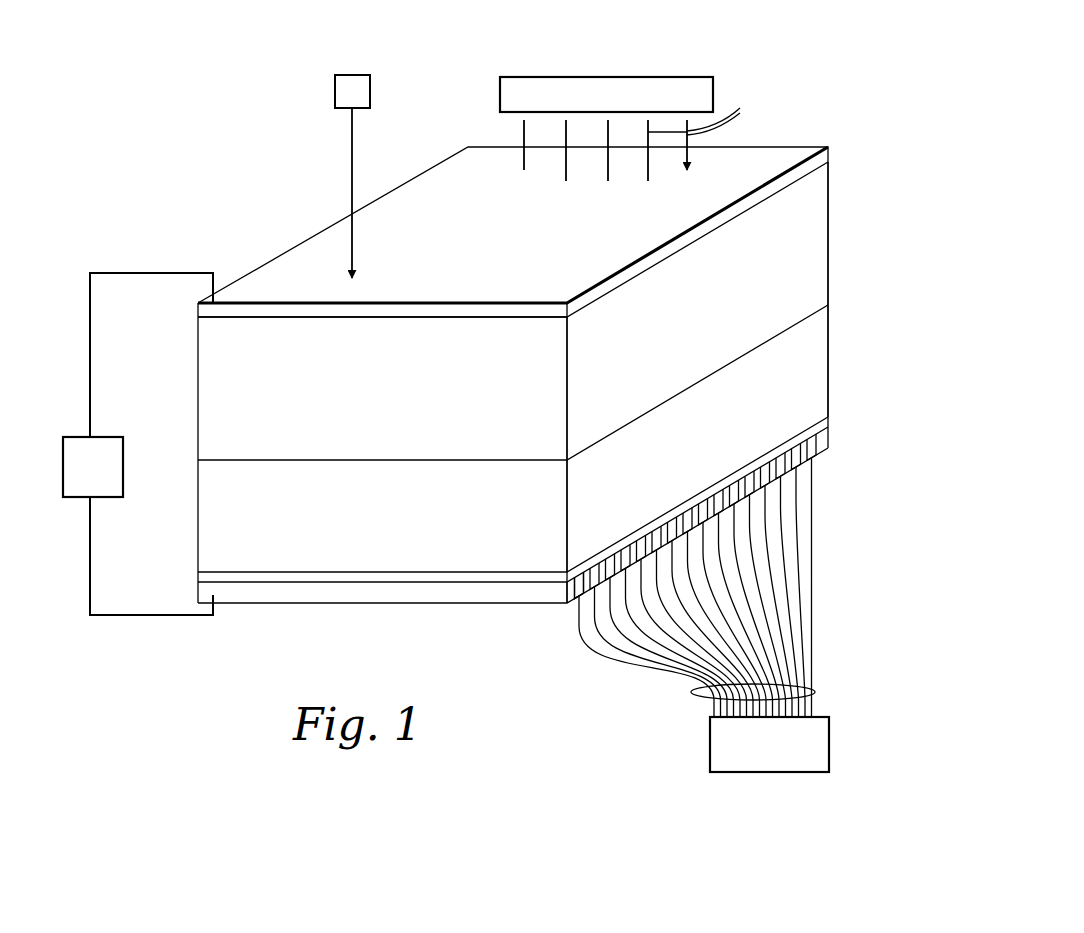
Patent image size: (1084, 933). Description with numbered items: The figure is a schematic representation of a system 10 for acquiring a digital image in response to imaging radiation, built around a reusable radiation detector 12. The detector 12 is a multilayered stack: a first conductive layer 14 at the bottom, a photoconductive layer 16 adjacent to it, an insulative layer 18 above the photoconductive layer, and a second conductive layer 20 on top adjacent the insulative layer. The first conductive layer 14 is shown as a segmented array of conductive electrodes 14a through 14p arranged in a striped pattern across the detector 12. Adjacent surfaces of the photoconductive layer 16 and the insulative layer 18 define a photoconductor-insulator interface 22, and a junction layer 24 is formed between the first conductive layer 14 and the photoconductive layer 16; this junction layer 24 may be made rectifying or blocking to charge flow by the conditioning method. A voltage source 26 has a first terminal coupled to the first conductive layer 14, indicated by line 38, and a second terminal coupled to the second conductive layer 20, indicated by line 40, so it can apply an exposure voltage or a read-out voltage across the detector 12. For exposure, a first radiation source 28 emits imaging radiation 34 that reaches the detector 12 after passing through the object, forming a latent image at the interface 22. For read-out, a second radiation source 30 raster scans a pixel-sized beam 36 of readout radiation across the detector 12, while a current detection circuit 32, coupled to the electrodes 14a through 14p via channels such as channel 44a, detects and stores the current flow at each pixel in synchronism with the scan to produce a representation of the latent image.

The system 10 is at (133, 639).
The reusable radiation detector 12 is at (874, 280).
The first conductive layer 14 is at (287, 601).
The conductive electrode 14a is at (566, 606).
The conductive electrode 14p is at (828, 438).
The photoconductive layer 16 is at (842, 337).
The insulative layer 18 is at (820, 228).
The second conductive layer 20 is at (832, 152).
The photoconductor-insulator interface 22 is at (214, 460).
The junction layer 24 is at (828, 420).
The voltage source 26 is at (123, 480).
The first radiation source 28 is at (652, 77).
The second radiation source 30 is at (370, 88).
The current detection circuit 32 is at (742, 772).
The imaging radiation 34 is at (647, 135).
The pixel-sized beam of readout radiation 36 is at (350, 157).
The line 38 is at (90, 562).
The line 40 is at (90, 313).
The channel 44a is at (817, 693).